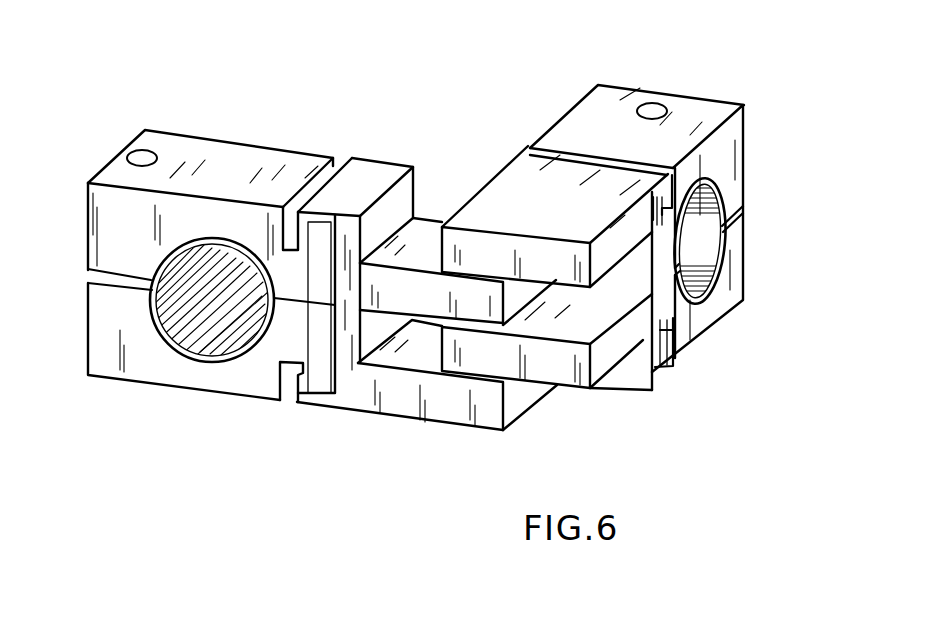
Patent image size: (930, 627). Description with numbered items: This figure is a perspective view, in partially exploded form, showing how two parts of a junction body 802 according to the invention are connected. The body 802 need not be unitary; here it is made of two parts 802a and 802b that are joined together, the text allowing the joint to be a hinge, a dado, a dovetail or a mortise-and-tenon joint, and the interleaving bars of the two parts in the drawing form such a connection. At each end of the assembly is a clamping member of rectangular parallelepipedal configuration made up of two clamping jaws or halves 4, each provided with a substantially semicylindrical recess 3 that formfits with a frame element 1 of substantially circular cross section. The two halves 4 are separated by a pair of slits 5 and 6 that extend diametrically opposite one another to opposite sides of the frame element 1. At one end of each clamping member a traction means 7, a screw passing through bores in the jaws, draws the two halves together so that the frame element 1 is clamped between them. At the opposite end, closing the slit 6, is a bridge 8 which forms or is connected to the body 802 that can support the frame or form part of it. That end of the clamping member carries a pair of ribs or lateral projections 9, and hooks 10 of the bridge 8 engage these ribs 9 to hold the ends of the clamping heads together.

The frame element 1 is at (182, 330).
The semicylindrical recess 3 is at (243, 217).
The clamping jaw 4 is at (187, 210).
The slit 5 is at (105, 281).
The slit 6 is at (298, 307).
The traction means 7 is at (140, 152).
The bridge 8 is at (346, 372).
The rib 9 is at (313, 232).
The hook 10 is at (333, 214).
The body 802 is at (437, 160).
The first body part 802a is at (433, 430).
The second body part 802b is at (570, 389).